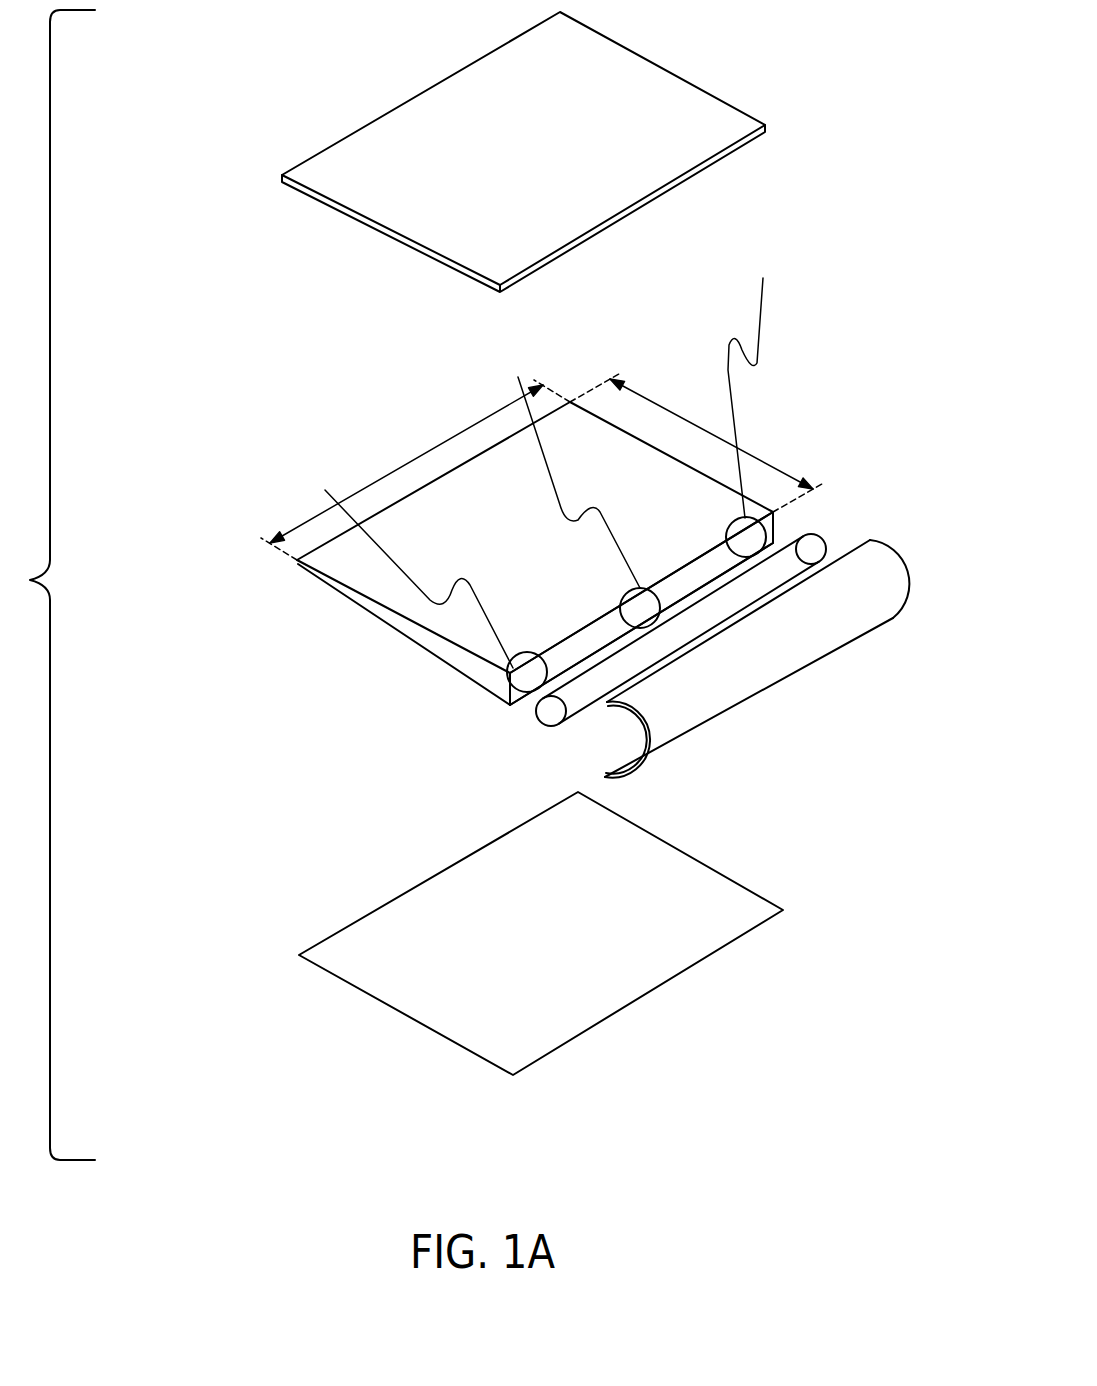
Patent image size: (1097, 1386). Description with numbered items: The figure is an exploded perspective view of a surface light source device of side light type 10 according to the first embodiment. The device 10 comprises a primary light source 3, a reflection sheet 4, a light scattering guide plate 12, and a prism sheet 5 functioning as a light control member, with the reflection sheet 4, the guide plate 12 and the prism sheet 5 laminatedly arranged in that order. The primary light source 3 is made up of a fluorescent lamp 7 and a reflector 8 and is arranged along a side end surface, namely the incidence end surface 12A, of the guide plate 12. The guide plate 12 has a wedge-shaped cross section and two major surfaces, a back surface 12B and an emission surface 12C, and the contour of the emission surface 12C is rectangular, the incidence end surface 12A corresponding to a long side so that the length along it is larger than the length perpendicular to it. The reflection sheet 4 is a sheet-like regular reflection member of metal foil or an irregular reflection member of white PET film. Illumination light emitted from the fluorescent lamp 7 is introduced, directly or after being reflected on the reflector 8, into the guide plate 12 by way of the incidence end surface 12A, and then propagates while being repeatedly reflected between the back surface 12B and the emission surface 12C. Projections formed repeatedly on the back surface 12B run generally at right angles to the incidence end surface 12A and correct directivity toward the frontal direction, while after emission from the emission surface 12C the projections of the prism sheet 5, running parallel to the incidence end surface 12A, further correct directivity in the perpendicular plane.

The primary light source 3 is at (722, 711).
The reflection sheet 4 is at (562, 1037).
The prism sheet 5 is at (622, 83).
The fluorescent lamp 7 is at (787, 570).
The reflector 8 is at (763, 658).
The surface light source device of side light type 10 is at (260, 1059).
The light scattering guide plate 12 is at (520, 524).
The incidence end surface 12A is at (692, 575).
The back surface 12B is at (417, 650).
The emission surface 12C is at (383, 582).